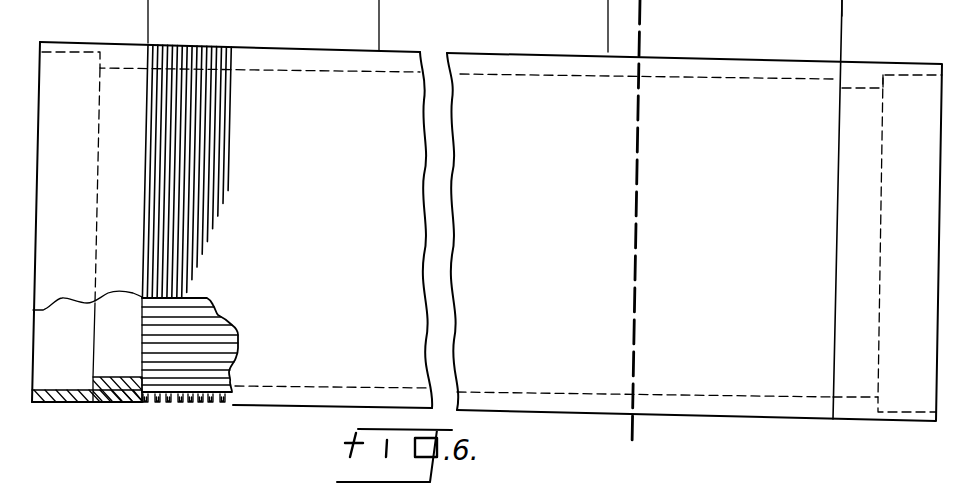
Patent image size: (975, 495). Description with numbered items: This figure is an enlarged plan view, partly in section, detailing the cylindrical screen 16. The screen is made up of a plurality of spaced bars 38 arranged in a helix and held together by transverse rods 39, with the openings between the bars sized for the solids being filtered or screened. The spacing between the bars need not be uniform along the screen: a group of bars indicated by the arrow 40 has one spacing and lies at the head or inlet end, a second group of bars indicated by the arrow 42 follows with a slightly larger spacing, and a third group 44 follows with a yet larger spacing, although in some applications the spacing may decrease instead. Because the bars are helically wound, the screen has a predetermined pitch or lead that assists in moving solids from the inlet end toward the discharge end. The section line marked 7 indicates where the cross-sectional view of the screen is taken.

The section line 7- 7 is at (682, 445).
The housing 16 is at (745, 421).
The spaced bars 38 is at (193, 405).
The transverse rods 39 is at (209, 388).
The group of bars 40 is at (379, 8).
The second group of bars 42 is at (608, 12).
The third group of bars 44 is at (842, 16).